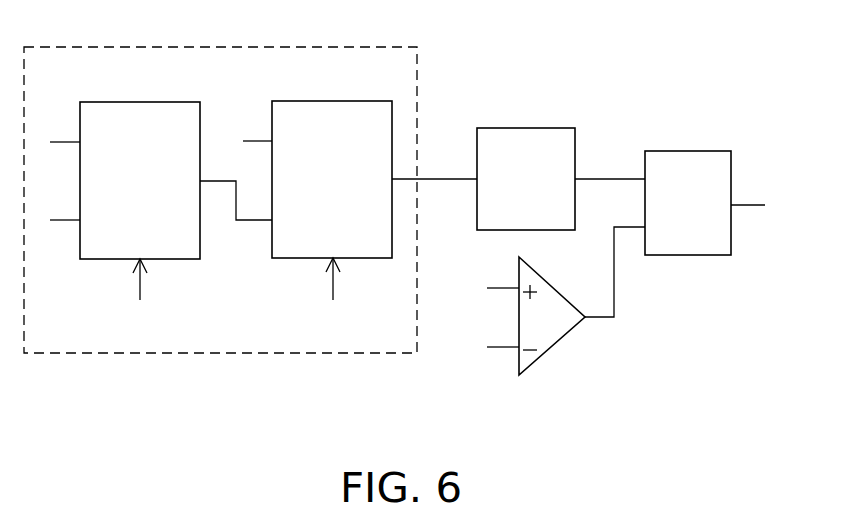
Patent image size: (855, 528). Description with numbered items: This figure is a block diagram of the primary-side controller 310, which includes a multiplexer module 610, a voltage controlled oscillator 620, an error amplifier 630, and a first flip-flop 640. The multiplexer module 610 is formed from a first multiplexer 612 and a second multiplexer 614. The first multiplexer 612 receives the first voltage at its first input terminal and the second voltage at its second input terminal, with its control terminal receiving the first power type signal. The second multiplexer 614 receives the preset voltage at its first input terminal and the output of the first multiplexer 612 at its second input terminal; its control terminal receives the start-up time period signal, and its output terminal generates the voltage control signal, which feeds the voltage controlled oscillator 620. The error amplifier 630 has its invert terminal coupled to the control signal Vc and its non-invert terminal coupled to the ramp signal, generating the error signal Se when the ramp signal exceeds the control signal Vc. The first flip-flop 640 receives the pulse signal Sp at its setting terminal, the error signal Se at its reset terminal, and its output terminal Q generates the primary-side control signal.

The primary-side controller 310 is at (708, 425).
The multiplexer module 610 is at (262, 47).
The first multiplexer 612 is at (120, 102).
The second multiplexer 614 is at (313, 101).
The voltage controlled oscillator 620 is at (516, 128).
The error amplifier 630 is at (552, 348).
The first flip-flop 640 is at (688, 151).